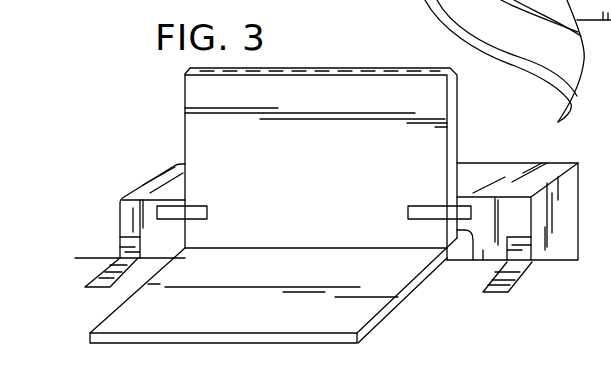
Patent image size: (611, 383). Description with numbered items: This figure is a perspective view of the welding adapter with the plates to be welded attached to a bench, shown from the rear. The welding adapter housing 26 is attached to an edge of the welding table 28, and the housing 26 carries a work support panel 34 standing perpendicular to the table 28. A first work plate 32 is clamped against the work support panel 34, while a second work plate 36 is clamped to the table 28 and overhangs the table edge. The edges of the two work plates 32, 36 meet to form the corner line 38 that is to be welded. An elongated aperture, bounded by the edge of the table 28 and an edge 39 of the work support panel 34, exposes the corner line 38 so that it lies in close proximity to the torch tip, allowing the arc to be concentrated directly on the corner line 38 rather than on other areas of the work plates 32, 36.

The housing 26 is at (137, 225).
The welding table 28 is at (323, 222).
The first work plate 32 is at (192, 115).
The work support panel 34 is at (131, 213).
The second work plate 36 is at (250, 326).
The corner line 38 is at (92, 258).
The edge of the work support surface 39 is at (464, 242).